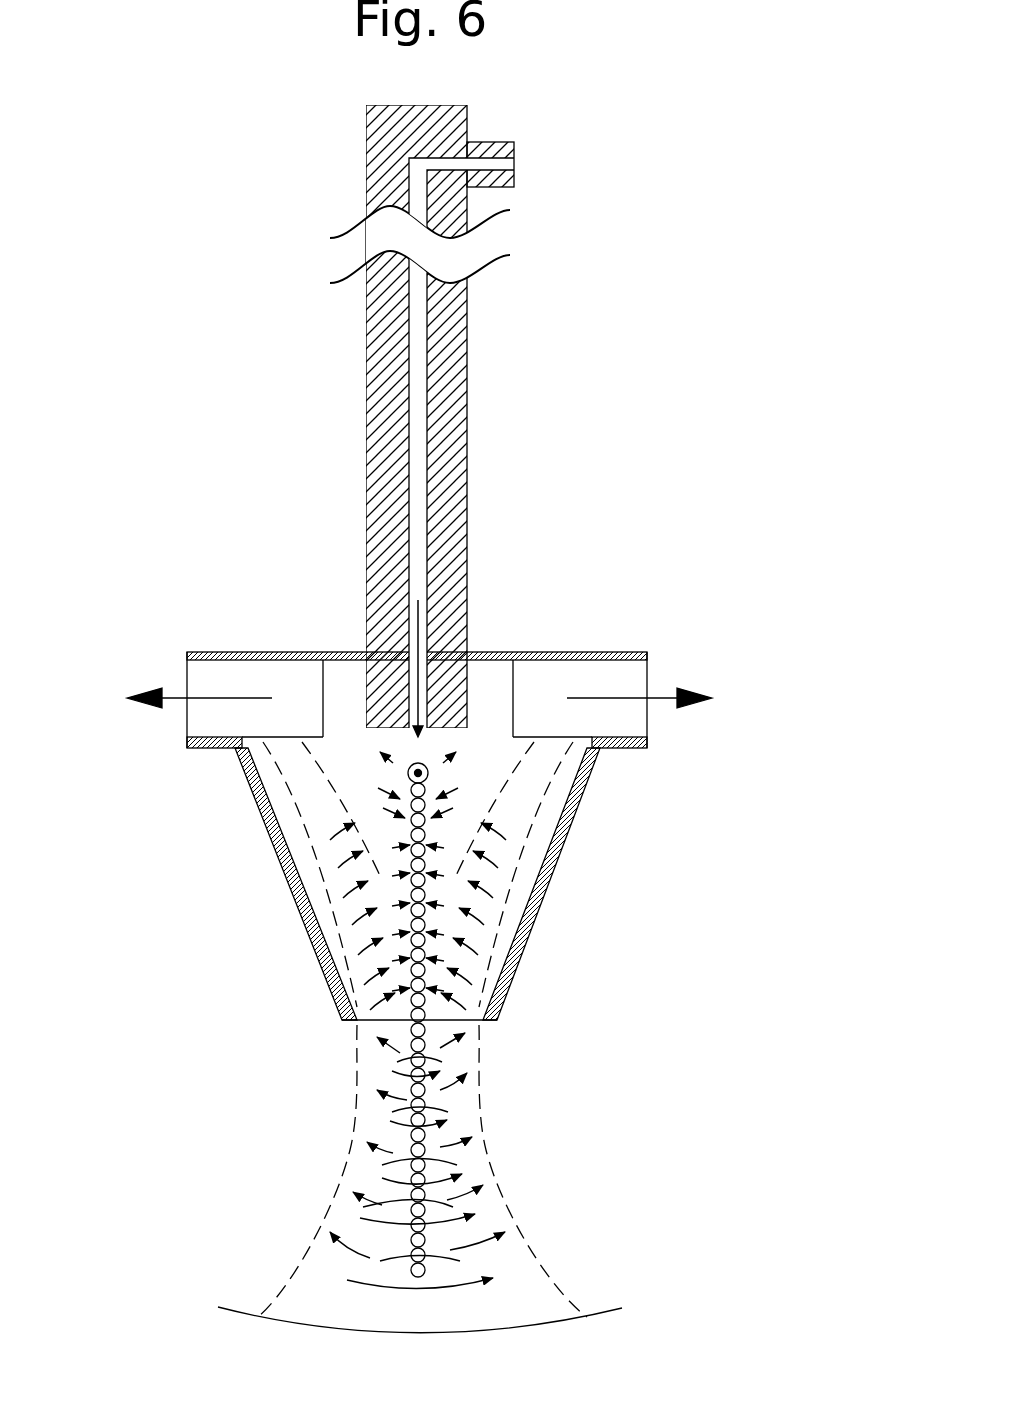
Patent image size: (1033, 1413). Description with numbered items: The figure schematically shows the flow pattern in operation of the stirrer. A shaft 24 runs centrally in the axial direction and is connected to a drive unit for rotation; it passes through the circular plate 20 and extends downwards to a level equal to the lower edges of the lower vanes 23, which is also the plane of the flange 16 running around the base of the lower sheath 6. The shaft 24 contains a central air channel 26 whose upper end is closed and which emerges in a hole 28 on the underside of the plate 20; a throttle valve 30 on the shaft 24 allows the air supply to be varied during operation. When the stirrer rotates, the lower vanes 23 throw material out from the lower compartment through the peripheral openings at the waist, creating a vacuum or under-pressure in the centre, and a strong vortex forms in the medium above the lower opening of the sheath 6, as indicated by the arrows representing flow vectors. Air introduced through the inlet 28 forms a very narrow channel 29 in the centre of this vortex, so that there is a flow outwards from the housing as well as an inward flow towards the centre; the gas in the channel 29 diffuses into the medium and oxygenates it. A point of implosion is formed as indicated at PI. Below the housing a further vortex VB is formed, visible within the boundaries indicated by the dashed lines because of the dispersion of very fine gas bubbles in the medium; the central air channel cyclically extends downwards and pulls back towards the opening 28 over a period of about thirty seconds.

The second lower sheath 6 is at (565, 847).
The flange 16 is at (620, 748).
The circular plate 20 is at (536, 652).
The lower vanes 23 is at (218, 687).
The shaft 24 is at (467, 368).
The central air channel 26 is at (410, 477).
The hole 28 is at (430, 743).
The narrow channel 29 is at (425, 1012).
The throttle valve 30 is at (556, 165).
The point of implosion PI is at (428, 773).
The treatment volume VB is at (536, 1227).